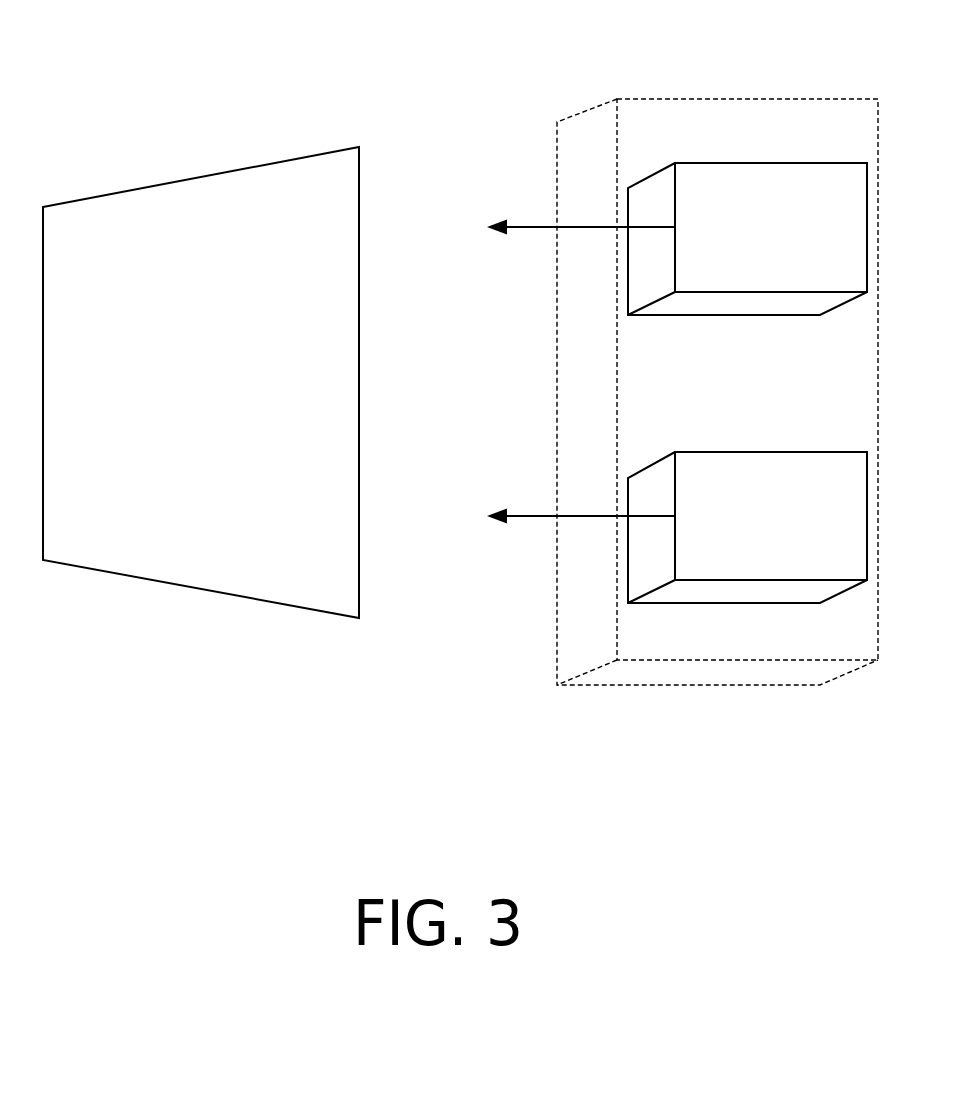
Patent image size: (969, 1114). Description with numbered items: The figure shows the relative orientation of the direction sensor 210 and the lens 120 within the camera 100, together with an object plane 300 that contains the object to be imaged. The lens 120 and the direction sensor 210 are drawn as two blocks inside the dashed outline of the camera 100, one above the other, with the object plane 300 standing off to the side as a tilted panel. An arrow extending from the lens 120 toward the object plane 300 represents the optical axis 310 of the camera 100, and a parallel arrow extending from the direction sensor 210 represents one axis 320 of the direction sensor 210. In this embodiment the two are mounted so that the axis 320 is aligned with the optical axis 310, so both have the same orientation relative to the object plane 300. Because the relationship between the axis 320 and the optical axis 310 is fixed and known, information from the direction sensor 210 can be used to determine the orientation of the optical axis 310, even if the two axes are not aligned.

The camera 100 is at (756, 87).
The lens 120 is at (747, 239).
The direction sensor 210 is at (747, 527).
The object plane 300 is at (270, 163).
The optical axis 310 is at (542, 213).
The axis of the direction sensor 320 is at (542, 502).